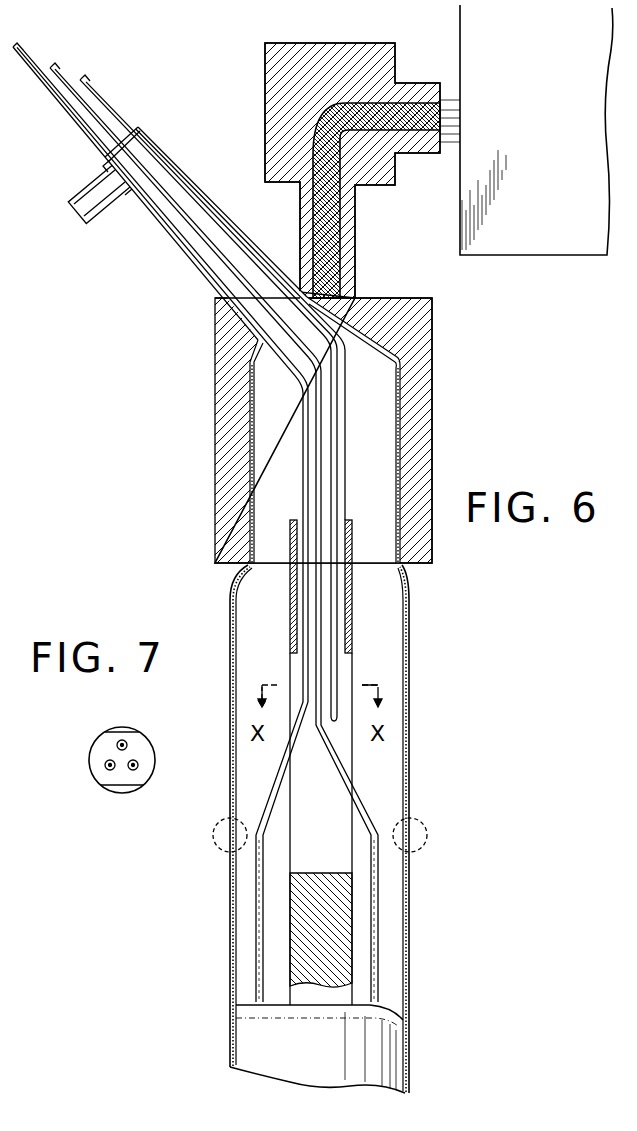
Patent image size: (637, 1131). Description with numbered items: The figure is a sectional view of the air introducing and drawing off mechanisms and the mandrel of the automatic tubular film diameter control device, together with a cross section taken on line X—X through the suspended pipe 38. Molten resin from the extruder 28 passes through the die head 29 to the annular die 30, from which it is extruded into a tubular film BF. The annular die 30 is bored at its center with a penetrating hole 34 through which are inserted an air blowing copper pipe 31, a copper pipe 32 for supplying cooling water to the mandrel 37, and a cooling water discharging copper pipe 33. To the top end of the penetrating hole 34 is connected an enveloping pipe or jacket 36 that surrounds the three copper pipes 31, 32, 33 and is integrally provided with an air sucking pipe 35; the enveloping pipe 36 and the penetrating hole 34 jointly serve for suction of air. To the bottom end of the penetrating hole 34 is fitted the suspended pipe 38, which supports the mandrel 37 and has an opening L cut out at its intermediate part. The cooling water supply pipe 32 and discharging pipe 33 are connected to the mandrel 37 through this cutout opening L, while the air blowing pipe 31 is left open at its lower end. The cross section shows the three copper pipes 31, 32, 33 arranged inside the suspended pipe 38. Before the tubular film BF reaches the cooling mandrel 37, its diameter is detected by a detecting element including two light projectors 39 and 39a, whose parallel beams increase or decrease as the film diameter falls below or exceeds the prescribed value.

In FIG. 6, the extruder 28 is at (538, 257).
In FIG. 6, the die head 29 is at (355, 43).
In FIG. 6, the annular die 30 is at (433, 415).
In FIG. 6, the air blowing copper pipe 31 is at (99, 81).
In FIG. 7, the air blowing copper pipe 31 is at (138, 766).
In FIG. 6, the copper pipe for supplying a cooling medium 32 is at (61, 64).
In FIG. 7, the copper pipe for supplying a cooling medium 32 is at (117, 745).
In FIG. 6, the cooling water discharging copper pipe 33 is at (27, 44).
In FIG. 7, the cooling water discharging copper pipe 33 is at (106, 766).
In FIG. 6, the penetrating hole 34 is at (300, 462).
In FIG. 6, the air sucking pipe 35 is at (110, 205).
In FIG. 6, the enveloping pipe or jacket 36 is at (190, 172).
In FIG. 6, the mandrel 37 is at (246, 1042).
In FIG. 6, the suspended pipe 38 is at (356, 671).
In FIG. 7, the suspended pipe 38 is at (155, 736).
In FIG. 6, the light projector 39 is at (217, 846).
In FIG. 6, the light projector 39a is at (423, 848).
In FIG. 6, the tubular film BF is at (412, 665).
In FIG. 6, the opening L is at (321, 904).